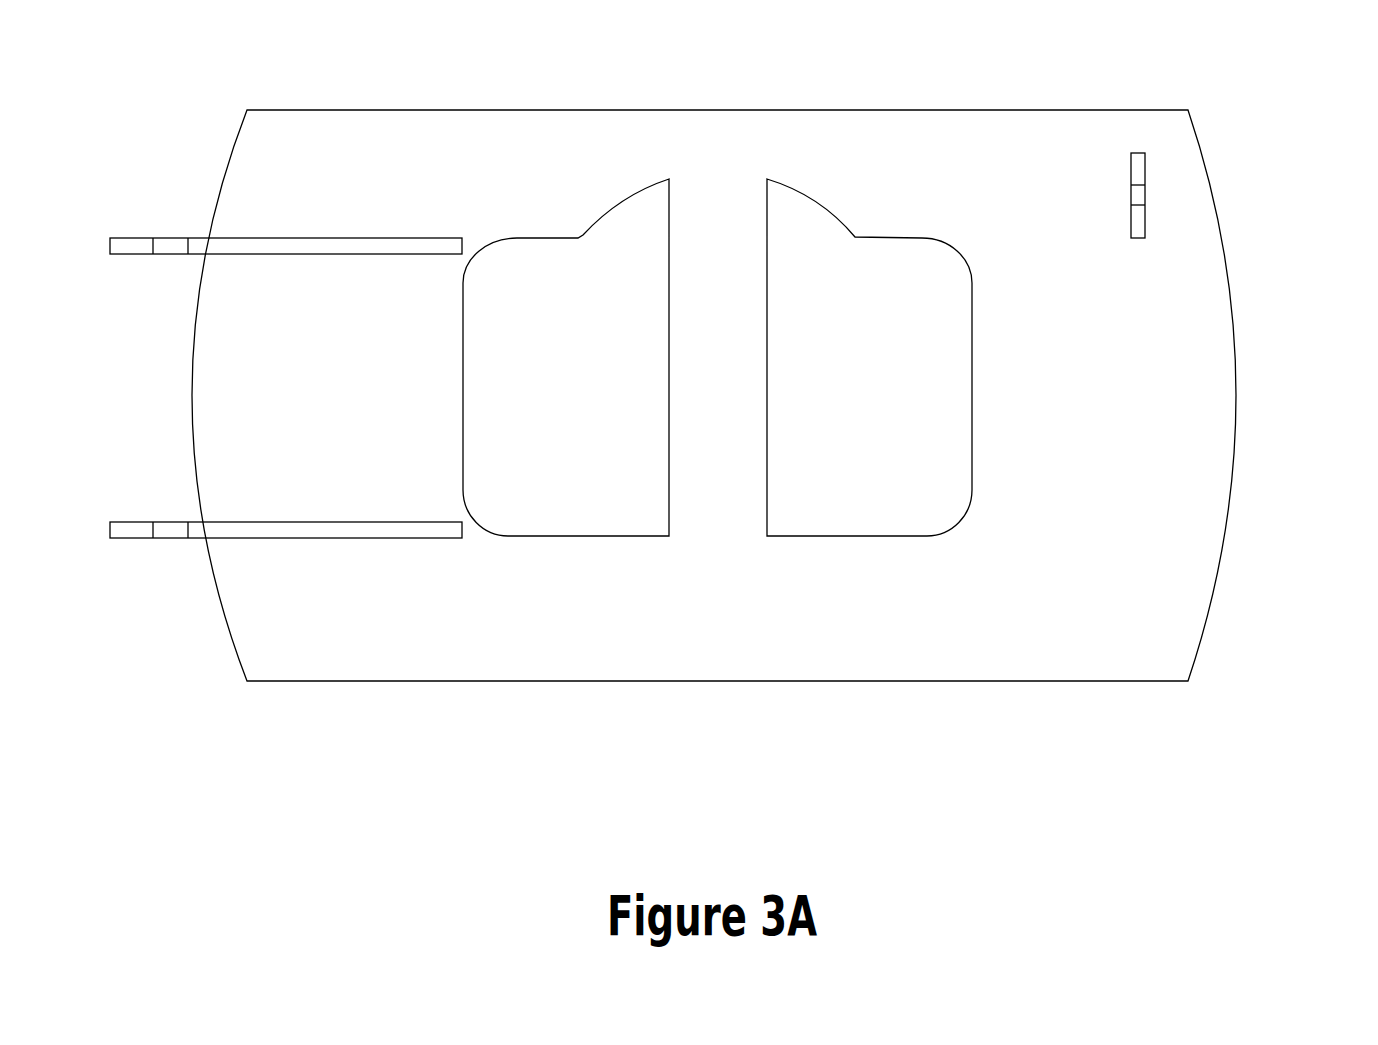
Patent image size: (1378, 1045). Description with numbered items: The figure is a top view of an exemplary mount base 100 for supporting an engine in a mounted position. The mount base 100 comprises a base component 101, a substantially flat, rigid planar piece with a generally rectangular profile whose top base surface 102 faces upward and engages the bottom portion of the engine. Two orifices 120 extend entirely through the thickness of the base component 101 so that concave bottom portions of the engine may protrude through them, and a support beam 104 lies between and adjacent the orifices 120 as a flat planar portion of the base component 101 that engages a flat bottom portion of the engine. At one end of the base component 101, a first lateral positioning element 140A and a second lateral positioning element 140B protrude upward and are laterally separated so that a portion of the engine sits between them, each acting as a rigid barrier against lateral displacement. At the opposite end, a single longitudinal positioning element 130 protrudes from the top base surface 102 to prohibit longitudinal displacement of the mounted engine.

The mount base 100 is at (172, 52).
The base component 101 is at (1264, 618).
The top base surface 102 is at (1008, 627).
The support beam 104 is at (733, 370).
The orifices 120 is at (606, 446).
The longitudinal positioning element 130 is at (1137, 198).
The first lateral positioning element 140A is at (307, 530).
The second lateral positioning element 140B is at (303, 248).